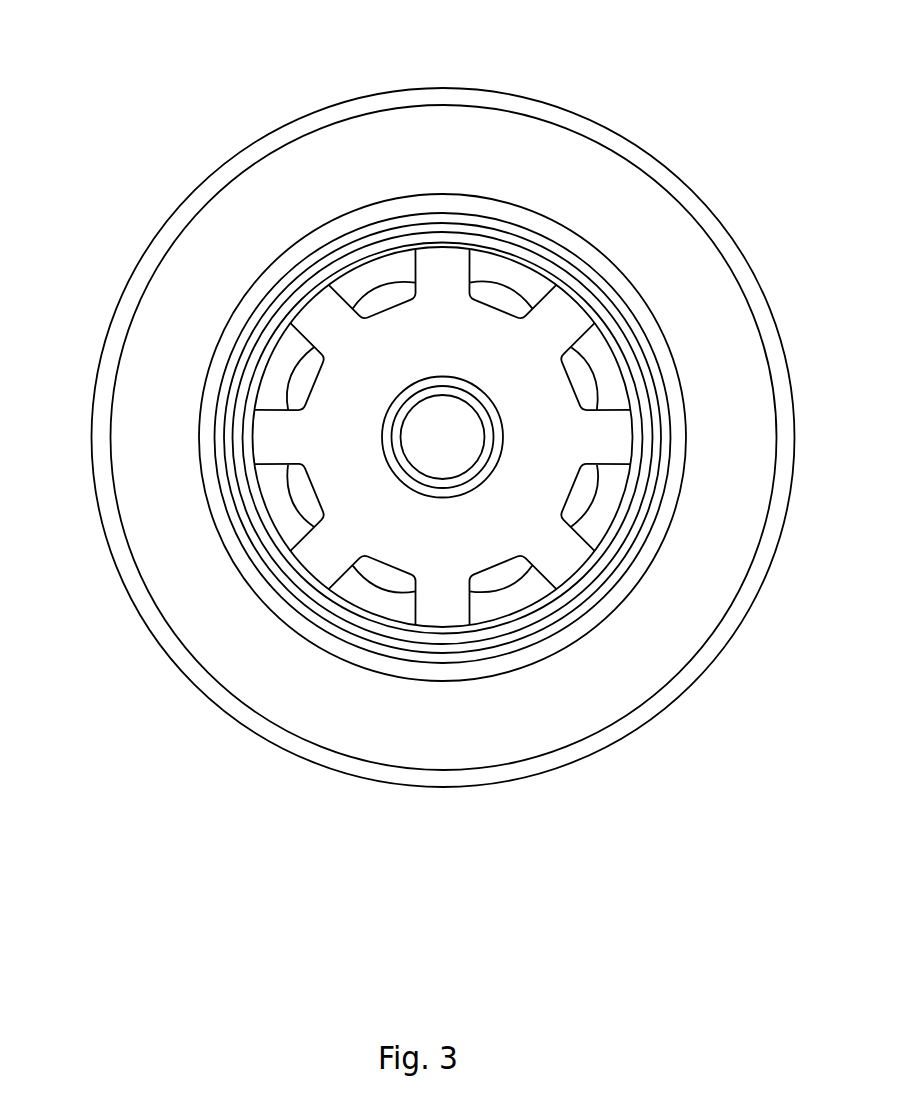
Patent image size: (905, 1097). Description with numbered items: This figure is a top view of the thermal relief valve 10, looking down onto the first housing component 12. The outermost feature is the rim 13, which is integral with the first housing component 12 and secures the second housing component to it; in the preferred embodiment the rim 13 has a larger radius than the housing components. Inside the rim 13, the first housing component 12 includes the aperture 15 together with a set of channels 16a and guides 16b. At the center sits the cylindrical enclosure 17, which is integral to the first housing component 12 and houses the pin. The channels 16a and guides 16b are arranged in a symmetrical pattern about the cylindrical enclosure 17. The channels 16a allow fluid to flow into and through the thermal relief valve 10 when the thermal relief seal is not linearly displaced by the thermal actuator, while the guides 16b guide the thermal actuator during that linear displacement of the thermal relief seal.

The thermal relief valve 10 is at (430, 437).
The first housing component 12 is at (679, 353).
The rim 13 is at (680, 168).
The aperture 15 is at (629, 295).
The channels 16a is at (510, 280).
The guides 16b is at (450, 282).
The cylindrical enclosure 17 is at (494, 476).